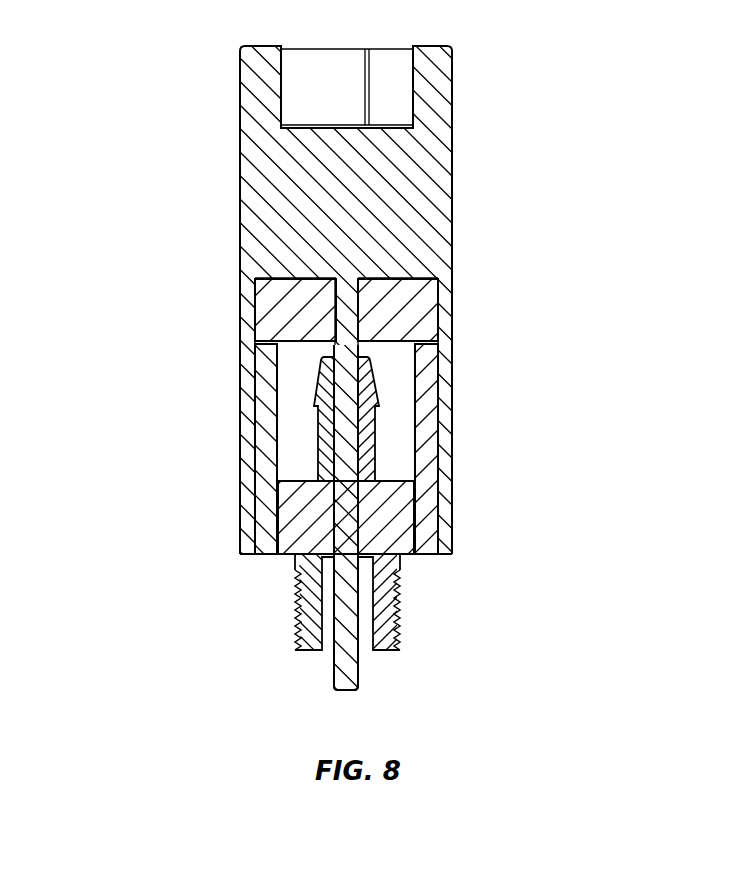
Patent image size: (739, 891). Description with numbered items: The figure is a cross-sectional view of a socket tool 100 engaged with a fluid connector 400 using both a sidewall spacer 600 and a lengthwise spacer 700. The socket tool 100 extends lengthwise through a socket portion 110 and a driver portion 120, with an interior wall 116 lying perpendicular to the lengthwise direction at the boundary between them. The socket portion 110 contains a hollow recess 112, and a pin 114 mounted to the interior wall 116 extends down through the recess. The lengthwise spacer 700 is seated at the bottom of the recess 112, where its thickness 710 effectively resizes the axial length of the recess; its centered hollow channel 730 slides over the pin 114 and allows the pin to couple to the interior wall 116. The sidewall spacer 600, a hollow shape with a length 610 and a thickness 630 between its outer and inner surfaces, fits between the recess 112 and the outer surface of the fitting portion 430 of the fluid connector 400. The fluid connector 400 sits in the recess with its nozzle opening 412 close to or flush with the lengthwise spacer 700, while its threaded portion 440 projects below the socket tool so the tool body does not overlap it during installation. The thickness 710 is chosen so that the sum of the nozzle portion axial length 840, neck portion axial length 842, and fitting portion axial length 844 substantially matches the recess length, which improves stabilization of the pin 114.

The socket tool 100 is at (452, 82).
The socket portion 110 is at (111, 258).
The hollow recess 112 is at (382, 393).
The pin 114 is at (335, 687).
The interior wall 116 is at (400, 274).
The driver portion 120 is at (111, 48).
The fluid connector 400 is at (410, 480).
The nozzle opening 412 is at (354, 361).
The fitting portion 430 is at (413, 538).
The threaded portion 440 is at (297, 630).
The sidewall spacer 600 is at (268, 347).
The length 610 is at (553, 345).
The thickness 630 is at (415, 559).
The lengthwise spacer 700 is at (268, 297).
The thickness 710 is at (553, 280).
The hollow channel 730 is at (407, 328).
The nozzle portion axial length 840 is at (224, 355).
The neck portion axial length 842 is at (224, 407).
The fitting portion axial length 844 is at (224, 480).